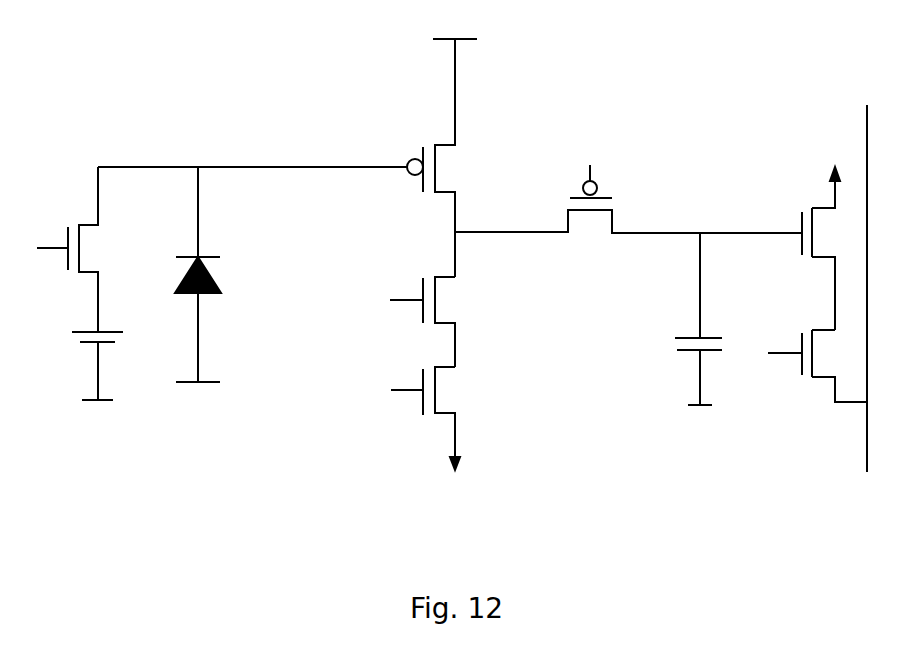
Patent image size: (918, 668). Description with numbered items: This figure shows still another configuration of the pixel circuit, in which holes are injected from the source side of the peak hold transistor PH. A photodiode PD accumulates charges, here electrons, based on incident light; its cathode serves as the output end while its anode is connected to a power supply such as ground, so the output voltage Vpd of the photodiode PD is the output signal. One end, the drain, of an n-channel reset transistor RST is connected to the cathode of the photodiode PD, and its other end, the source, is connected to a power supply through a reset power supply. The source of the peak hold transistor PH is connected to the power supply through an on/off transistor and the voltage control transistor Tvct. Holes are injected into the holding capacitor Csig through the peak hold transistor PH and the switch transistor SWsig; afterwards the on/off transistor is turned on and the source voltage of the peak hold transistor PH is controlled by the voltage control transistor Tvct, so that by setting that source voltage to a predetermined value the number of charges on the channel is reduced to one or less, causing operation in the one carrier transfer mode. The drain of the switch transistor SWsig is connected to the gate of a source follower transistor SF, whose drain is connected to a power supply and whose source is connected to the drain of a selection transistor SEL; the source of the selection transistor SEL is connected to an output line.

The output voltage Vpd is at (252, 153).
The reset transistor RST is at (74, 283).
The photodiode PD is at (220, 274).
The peak hold transistor PH is at (448, 158).
The voltage control transistor Tvct is at (448, 418).
The switch transistor SWsig is at (602, 164).
The holding capacitor Csig is at (670, 319).
The source follower transistor SF is at (810, 248).
The selection transistor SEL is at (812, 358).